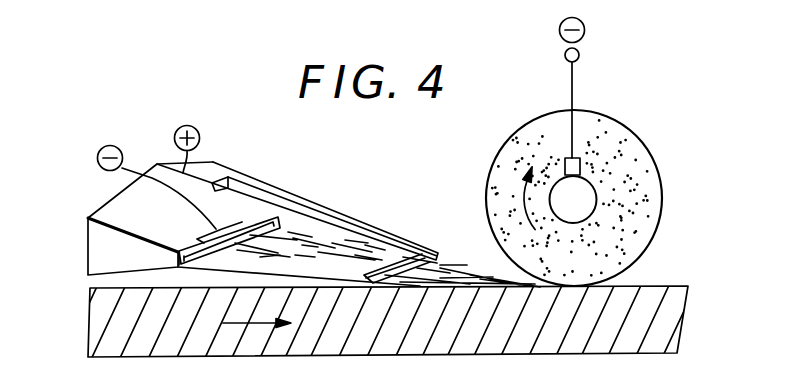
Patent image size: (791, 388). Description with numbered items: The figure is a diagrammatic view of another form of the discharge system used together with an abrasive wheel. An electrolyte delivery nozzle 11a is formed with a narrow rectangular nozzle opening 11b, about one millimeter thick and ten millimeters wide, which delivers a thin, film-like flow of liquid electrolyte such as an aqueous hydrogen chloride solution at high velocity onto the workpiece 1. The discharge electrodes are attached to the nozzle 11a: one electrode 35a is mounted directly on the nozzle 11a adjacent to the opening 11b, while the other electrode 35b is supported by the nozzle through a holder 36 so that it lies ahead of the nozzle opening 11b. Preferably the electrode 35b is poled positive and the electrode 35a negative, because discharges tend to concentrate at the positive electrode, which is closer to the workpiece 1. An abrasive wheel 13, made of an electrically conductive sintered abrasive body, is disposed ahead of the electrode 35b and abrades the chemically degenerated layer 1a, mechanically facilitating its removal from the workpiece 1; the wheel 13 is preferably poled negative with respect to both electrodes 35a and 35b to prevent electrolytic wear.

The workpiece 1 is at (100, 323).
The chemically degenerated layer 1a is at (500, 285).
The electrolyte delivery nozzle 11a is at (97, 245).
The nozzle opening 11b is at (189, 259).
The abrasive wheel 13 is at (633, 150).
The discharge electrode 35a is at (243, 227).
The discharge electrode 35b is at (385, 268).
The holder 36 is at (343, 213).